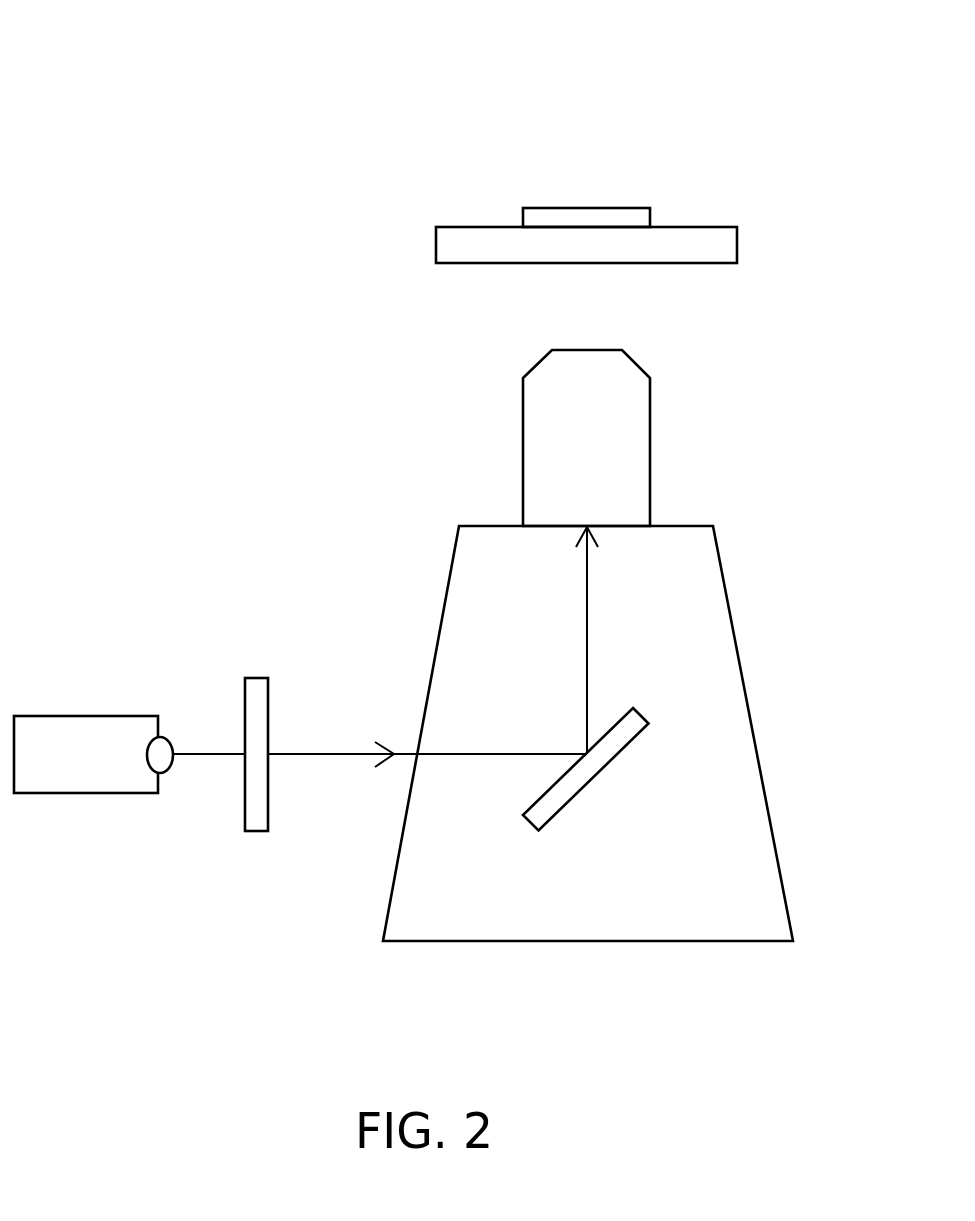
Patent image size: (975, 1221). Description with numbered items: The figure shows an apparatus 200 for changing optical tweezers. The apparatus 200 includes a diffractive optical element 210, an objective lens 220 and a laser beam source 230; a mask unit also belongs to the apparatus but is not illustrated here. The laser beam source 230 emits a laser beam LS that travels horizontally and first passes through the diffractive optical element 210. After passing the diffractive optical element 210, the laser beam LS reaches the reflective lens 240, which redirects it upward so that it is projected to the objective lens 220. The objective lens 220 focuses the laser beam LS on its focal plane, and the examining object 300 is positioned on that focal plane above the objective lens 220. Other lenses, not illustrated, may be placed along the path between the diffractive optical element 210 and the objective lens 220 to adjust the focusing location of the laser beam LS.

The apparatus for changing optical tweezers 200 is at (73, 54).
The examining object 300 is at (585, 208).
The objective lens 220 is at (651, 451).
The reflective lens 240 is at (647, 714).
The laser beam source 230 is at (85, 716).
The diffractive optical element 210 is at (257, 678).
The laser beam LS is at (330, 758).